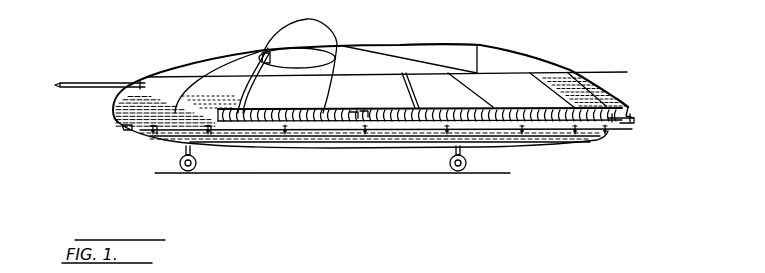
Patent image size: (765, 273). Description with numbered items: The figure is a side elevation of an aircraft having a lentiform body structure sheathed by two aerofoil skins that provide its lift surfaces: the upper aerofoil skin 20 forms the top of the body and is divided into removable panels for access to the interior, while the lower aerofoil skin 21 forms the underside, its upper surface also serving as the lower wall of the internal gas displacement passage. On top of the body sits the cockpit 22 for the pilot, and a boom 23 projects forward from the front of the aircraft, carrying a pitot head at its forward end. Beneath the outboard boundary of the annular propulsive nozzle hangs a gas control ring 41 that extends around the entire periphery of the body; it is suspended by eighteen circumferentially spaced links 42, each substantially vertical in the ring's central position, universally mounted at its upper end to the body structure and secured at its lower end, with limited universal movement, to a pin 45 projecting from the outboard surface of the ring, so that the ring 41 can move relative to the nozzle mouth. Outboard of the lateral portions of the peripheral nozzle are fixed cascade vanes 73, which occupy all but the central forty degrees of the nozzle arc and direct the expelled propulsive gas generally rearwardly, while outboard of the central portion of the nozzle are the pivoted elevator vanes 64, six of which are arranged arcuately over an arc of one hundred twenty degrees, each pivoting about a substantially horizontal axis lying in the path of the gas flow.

The upper aerofoil skin 20 is at (510, 49).
The lower aerofoil skin 21 is at (512, 150).
The cockpit 22 is at (297, 26).
The boom 23 is at (100, 82).
The gas control ring 41 is at (152, 130).
The link 42 is at (152, 130).
The pin 45 is at (208, 128).
The fixed cascade vane 73 is at (364, 113).
The elevator vane 64 is at (630, 120).